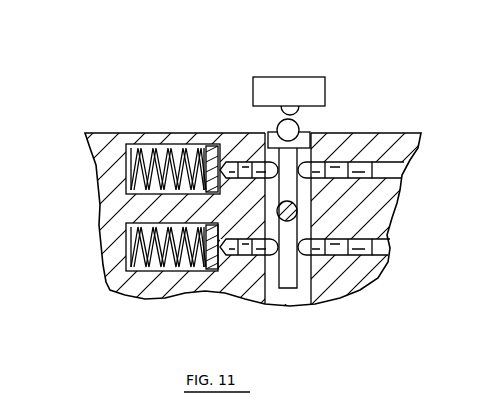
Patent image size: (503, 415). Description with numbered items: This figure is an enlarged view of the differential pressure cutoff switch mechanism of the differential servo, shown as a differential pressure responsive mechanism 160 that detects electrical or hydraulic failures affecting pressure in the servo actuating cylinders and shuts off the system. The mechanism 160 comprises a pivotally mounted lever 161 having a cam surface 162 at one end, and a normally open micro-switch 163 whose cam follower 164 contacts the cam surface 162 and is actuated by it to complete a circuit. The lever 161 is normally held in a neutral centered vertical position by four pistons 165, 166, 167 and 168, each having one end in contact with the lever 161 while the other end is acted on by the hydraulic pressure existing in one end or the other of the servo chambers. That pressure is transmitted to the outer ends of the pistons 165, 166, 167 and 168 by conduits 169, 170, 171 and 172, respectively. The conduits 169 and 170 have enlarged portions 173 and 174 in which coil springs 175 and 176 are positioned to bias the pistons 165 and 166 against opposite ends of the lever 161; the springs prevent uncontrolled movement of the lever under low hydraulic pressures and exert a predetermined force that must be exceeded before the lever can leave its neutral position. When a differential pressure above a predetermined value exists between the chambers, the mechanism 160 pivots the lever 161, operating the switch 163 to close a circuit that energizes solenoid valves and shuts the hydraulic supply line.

The differential pressure responsive mechanism 160 is at (393, 88).
The lever 161 is at (285, 273).
The cam surface 162 is at (278, 139).
The micro-switch 163 is at (295, 85).
The cam follower 164 is at (299, 128).
The piston 165 is at (262, 166).
The piston 166 is at (268, 258).
The piston 167 is at (363, 259).
The piston 168 is at (362, 178).
The conduit 169 is at (113, 248).
The conduit 170 is at (108, 173).
The conduit 171 is at (381, 248).
The conduit 172 is at (395, 172).
The enlarged portion 173 is at (137, 272).
The enlarged portion 174 is at (170, 145).
The coil spring 175 is at (189, 272).
The coil spring 176 is at (133, 147).